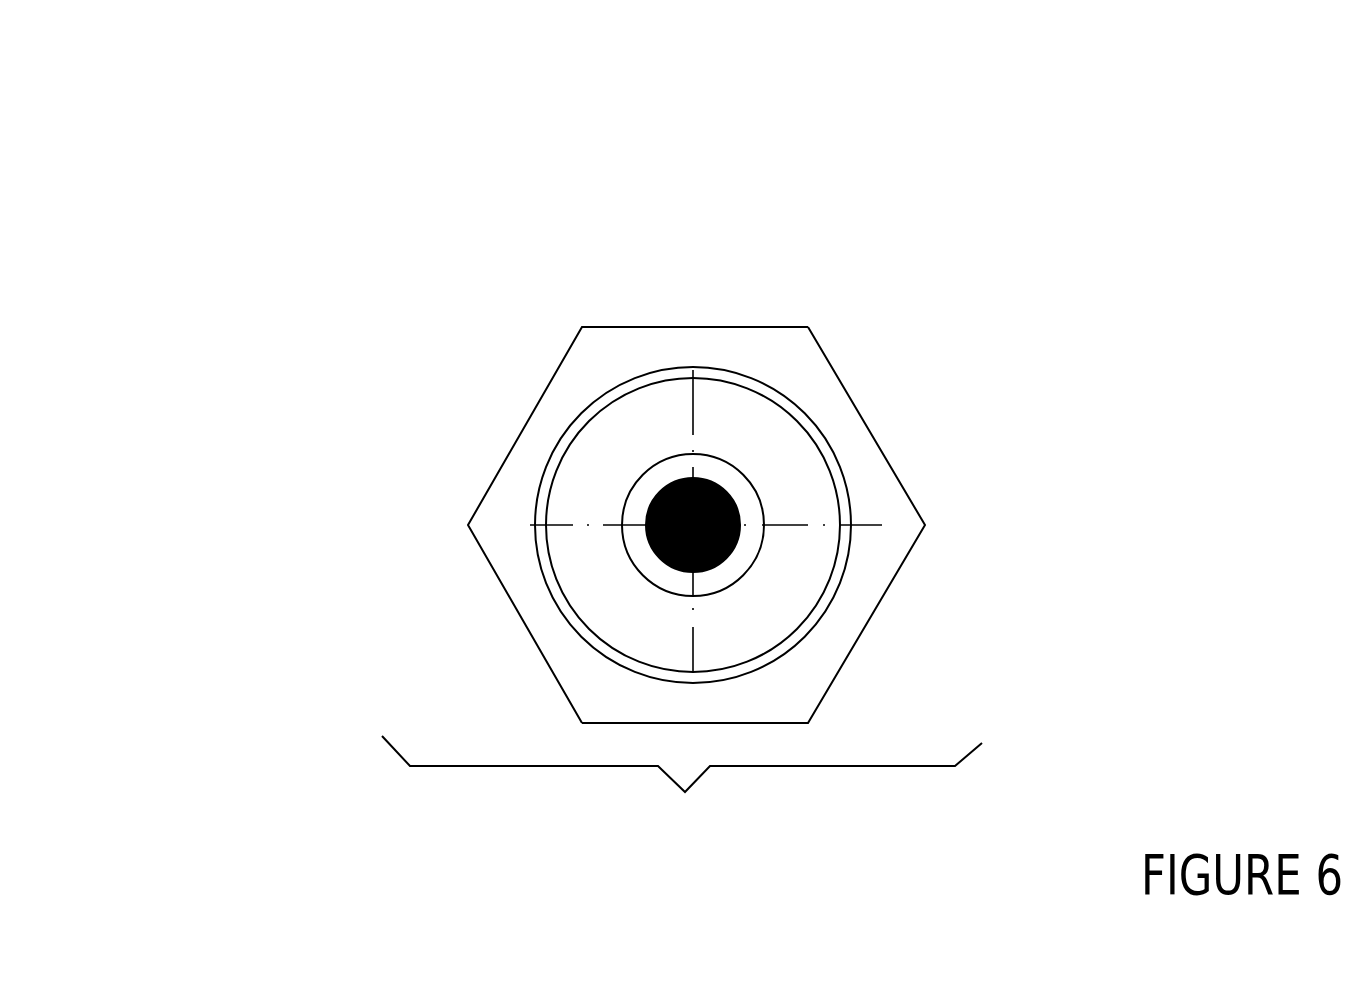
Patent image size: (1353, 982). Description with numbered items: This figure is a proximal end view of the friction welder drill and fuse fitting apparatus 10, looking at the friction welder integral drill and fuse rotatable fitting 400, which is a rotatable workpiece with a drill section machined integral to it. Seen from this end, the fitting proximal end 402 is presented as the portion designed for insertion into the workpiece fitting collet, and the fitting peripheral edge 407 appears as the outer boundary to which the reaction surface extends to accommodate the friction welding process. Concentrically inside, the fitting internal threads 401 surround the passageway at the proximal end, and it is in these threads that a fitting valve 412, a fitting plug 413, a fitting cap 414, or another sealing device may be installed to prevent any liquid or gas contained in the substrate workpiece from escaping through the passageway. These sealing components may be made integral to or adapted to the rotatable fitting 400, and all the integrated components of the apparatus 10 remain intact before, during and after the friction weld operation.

The friction welder drill and fuse fitting apparatus 10 is at (682, 797).
The friction welder integral drill and fuse rotatable fitting 400 is at (558, 364).
The friction welder integral drill and fuse rotatable fitting internal threads 401 is at (603, 363).
The friction welder integral drill and fuse rotatable fitting proximal end 402 is at (534, 428).
The friction welder integral drill and fuse rotatable fitting peripheral edge 407 is at (474, 369).
The friction welder integral drill and fuse rotatable fitting valve 412 is at (834, 313).
The friction welder integral drill and fuse rotatable fitting plug 413 is at (881, 325).
The friction welder integral drill and fuse rotatable fitting cap 414 is at (919, 388).